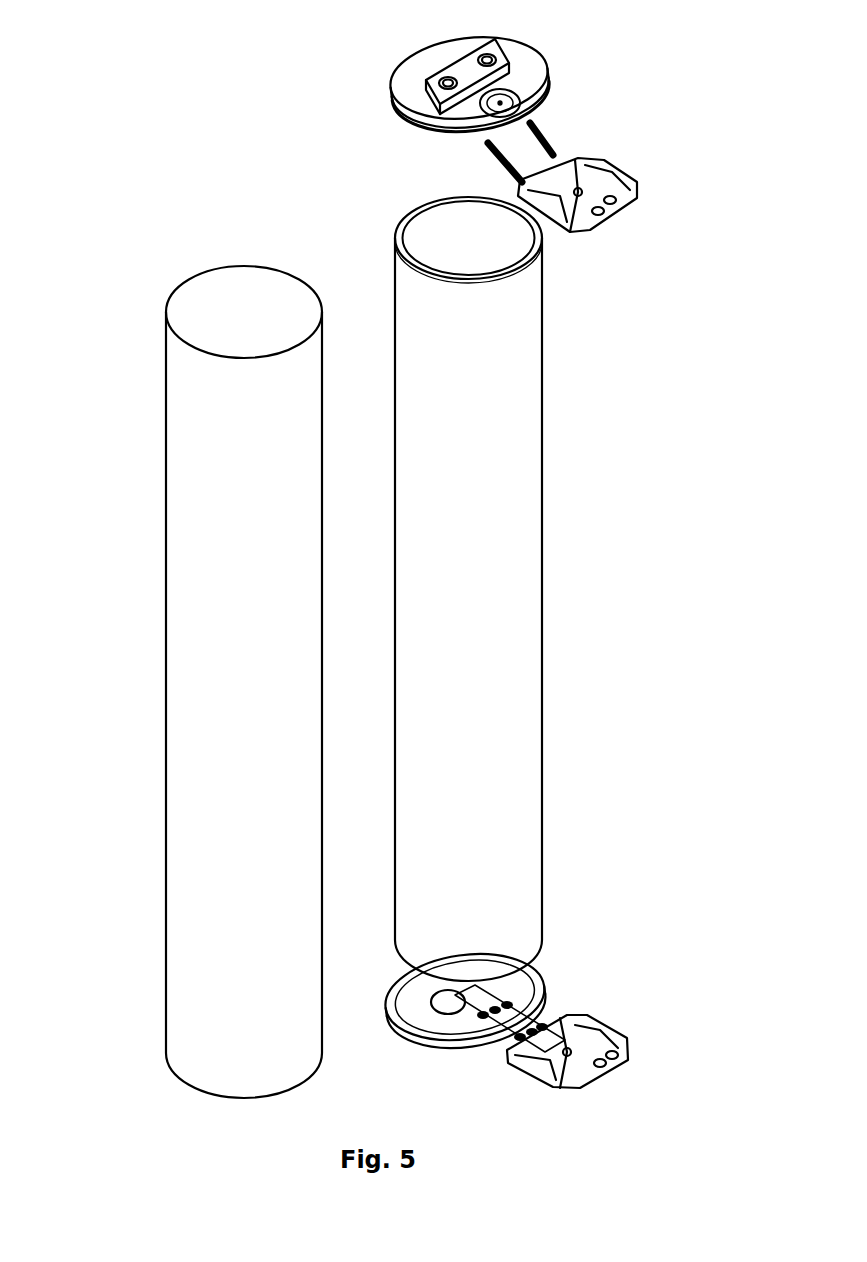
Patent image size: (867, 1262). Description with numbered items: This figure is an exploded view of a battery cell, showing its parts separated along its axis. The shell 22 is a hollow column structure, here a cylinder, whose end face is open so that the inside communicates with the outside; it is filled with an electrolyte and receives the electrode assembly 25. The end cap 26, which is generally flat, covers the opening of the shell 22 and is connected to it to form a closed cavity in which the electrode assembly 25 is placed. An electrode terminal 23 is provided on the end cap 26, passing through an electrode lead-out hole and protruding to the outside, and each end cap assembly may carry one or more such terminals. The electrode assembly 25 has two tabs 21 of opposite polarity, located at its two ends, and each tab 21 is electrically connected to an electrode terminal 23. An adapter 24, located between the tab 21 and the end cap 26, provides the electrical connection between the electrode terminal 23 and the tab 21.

The tab 21 is at (493, 235).
The shell 22 is at (217, 540).
The electrode terminal 23 is at (530, 63).
The adapter 24 is at (523, 155).
The electrode assembly 25 is at (517, 500).
The end cap 26 is at (418, 70).